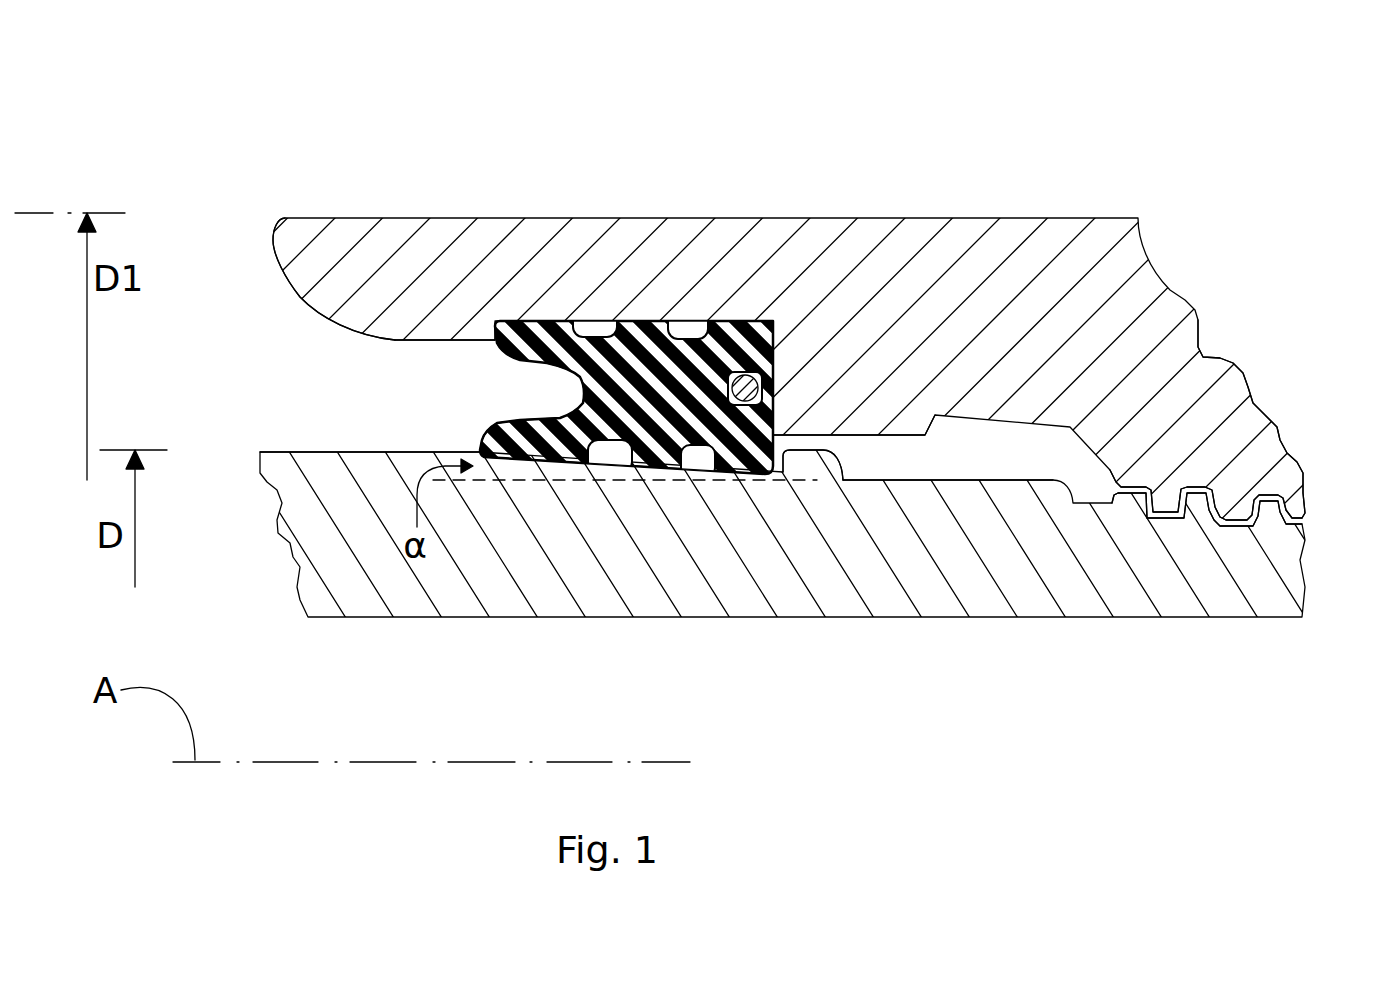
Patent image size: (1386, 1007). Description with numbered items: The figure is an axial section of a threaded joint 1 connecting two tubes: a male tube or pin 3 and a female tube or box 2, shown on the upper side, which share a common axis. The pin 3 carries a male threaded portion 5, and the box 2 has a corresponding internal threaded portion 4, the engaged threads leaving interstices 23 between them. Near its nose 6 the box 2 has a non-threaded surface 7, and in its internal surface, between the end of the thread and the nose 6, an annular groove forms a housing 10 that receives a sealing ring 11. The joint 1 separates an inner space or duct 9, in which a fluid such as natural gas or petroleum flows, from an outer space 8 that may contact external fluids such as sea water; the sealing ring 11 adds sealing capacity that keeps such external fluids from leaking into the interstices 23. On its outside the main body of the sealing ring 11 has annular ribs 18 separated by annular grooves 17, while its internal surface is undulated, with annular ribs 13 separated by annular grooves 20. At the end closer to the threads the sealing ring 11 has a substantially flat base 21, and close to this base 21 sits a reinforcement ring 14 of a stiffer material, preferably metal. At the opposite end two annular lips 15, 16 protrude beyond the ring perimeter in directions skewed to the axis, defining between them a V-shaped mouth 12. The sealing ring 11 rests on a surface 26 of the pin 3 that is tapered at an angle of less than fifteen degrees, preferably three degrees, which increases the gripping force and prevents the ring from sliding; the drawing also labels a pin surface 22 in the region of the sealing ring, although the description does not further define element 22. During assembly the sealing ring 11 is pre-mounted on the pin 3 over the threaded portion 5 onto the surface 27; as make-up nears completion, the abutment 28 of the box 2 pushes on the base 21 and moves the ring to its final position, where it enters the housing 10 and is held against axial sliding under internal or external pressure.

The threaded joint 1 is at (1128, 65).
The box 2 is at (693, 340).
The pin 3 is at (753, 597).
The internal threaded portion 4 is at (1279, 380).
The threaded portion 5 is at (1206, 619).
The nose 6 is at (283, 279).
The non-threaded surface 7 is at (412, 383).
The outer space 8 is at (726, 38).
The inner space or duct 9 is at (754, 735).
The housing 10 is at (624, 277).
The sealing ring 11 is at (476, 420).
The V-shaped mouth 12 is at (498, 380).
The annular ribs 13 is at (624, 603).
The reinforcement ring 14 is at (854, 255).
The annular lip 15 is at (450, 578).
The annular lip 16 is at (444, 209).
The annular grooves 17 is at (602, 203).
The annular ribs 18 is at (660, 190).
The annular grooves 20 is at (556, 587).
The base 21 is at (846, 583).
The sealing surface 22 is at (337, 403).
The interstices 23 is at (1207, 615).
The surface 26 is at (631, 597).
The surface 27 is at (948, 614).
The abutment 28 is at (844, 357).